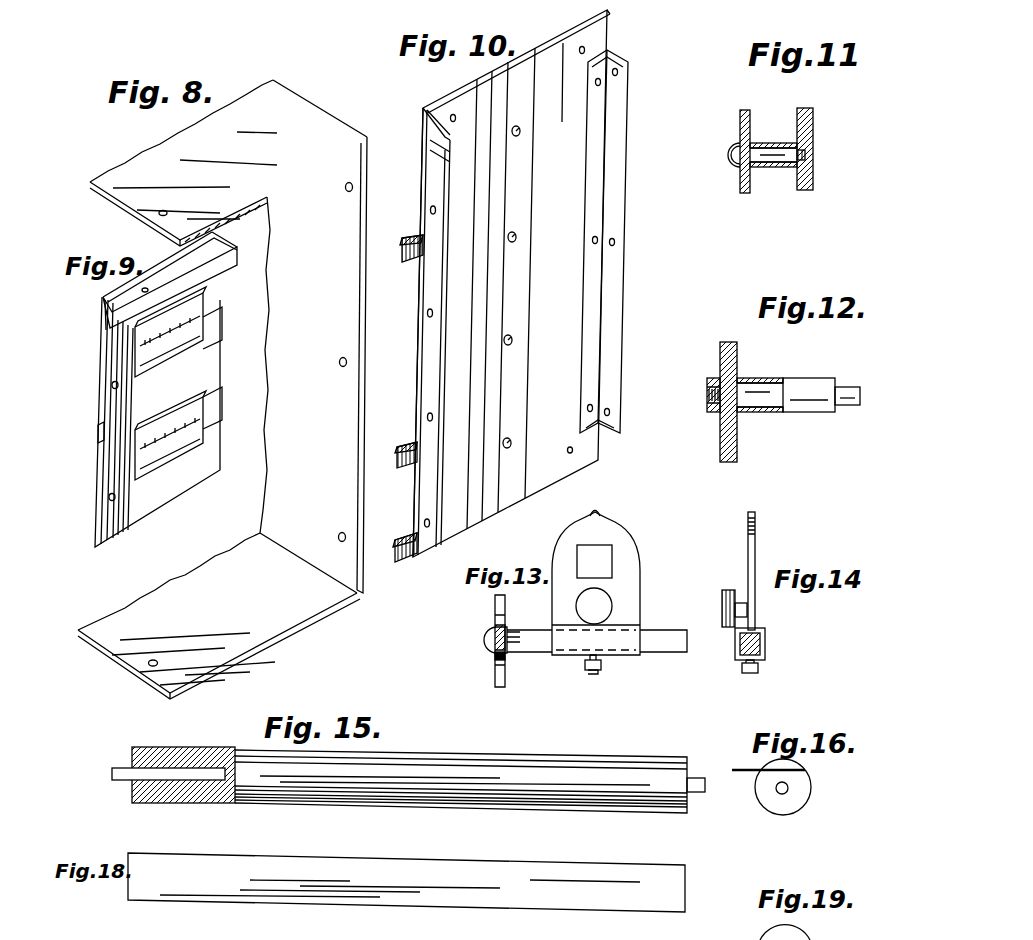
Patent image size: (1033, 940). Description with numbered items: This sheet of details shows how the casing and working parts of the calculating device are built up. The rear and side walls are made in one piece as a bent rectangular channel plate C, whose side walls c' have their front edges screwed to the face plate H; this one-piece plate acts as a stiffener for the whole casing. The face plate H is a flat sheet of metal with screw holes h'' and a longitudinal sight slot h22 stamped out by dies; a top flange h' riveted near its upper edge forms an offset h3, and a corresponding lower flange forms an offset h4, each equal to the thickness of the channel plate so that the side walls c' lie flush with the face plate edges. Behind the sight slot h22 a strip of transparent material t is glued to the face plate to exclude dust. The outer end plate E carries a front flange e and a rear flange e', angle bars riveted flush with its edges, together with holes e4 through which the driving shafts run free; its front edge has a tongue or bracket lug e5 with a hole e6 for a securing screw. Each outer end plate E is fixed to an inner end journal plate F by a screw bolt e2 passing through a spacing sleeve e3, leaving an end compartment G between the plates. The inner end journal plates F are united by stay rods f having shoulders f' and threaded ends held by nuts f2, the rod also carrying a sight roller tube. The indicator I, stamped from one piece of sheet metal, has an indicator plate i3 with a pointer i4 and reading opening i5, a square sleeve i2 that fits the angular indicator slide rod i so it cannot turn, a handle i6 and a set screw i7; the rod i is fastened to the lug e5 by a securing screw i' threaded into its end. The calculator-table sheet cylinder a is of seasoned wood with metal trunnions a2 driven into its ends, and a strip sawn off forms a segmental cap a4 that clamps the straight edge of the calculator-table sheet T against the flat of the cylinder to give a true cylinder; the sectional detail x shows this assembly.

In FIG. 8, the side walls c' is at (222, 389).
In FIG. 8, the rectangular channel plate C is at (313, 365).
In FIG. 9, the face plate H is at (157, 417).
In FIG. 9, the offset h3 is at (224, 243).
In FIG. 9, the top flange h' is at (180, 281).
In FIG. 9, the sight slot h22 is at (229, 302).
In FIG. 9, the transparent material t is at (214, 335).
In FIG. 9, the screw holes h'' is at (105, 451).
In FIG. 9, the offset h4 is at (94, 438).
In FIG. 10, the outer end plate E is at (511, 283).
In FIG. 11, the outer end plate E is at (737, 107).
In FIG. 13, the outer end plate E is at (503, 695).
In FIG. 10, the front flange e is at (449, 332).
In FIG. 10, the rear flange e' is at (614, 241).
In FIG. 10, the holes e4 is at (540, 320).
In FIG. 10, the tongues or bracket lugs e5 is at (415, 541).
In FIG. 13, the tongues or bracket lugs e5 is at (491, 662).
In FIG. 10, the holes e6 is at (420, 555).
In FIG. 11, the inner end journal plate F is at (814, 149).
In FIG. 12, the inner end journal plate F is at (720, 394).
In FIG. 11, the end space or compartment G is at (766, 130).
In FIG. 11, the screw bolt e2 is at (724, 166).
In FIG. 11, the spacing sleeve e3 is at (770, 174).
In FIG. 12, the shoulder f' is at (760, 378).
In FIG. 12, the nut f2 is at (700, 415).
In FIG. 12, the stay rod f is at (847, 429).
In FIG. 13, the indicator I is at (602, 583).
In FIG. 14, the indicator I is at (730, 557).
In FIG. 13, the pointer i4 is at (606, 505).
In FIG. 14, the pointer i4 is at (762, 506).
In FIG. 13, the indicator plate i3 is at (638, 540).
In FIG. 14, the indicator plate i3 is at (762, 571).
In FIG. 13, the reading opening i5 is at (594, 561).
In FIG. 13, the handle i6 is at (594, 606).
In FIG. 14, the handle i6 is at (725, 592).
In FIG. 13, the sleeve i2 is at (596, 640).
In FIG. 14, the sleeve i2 is at (774, 657).
In FIG. 13, the indicator slide rod i is at (602, 641).
In FIG. 14, the indicator slide rod i is at (697, 640).
In FIG. 13, the securing screw i' is at (481, 643).
In FIG. 14, the securing screw i' is at (775, 635).
In FIG. 13, the set screw i7 is at (596, 681).
In FIG. 14, the set screw i7 is at (760, 672).
In FIG. 15, the calculator-table sheet cylinder a is at (183, 786).
In FIG. 16, the calculator-table sheet cylinder a is at (789, 787).
In FIG. 18, the calculator-table sheet cylinder a is at (184, 932).
In FIG. 15, the metal trunnion a2 is at (103, 776).
In FIG. 16, the metal trunnion a2 is at (781, 803).
In FIG. 15, the segmental cap a4 is at (461, 774).
In FIG. 16, the segmental cap a4 is at (805, 763).
In FIG. 18, the segmental cap a4 is at (406, 882).
In FIG. 19, the segmental cap a4 is at (787, 930).
In FIG. 16, the calculator-table sheet T is at (743, 782).
In FIG. 19, the calculator-table sheet T is at (713, 933).
In FIG. 18, the section line x is at (466, 932).